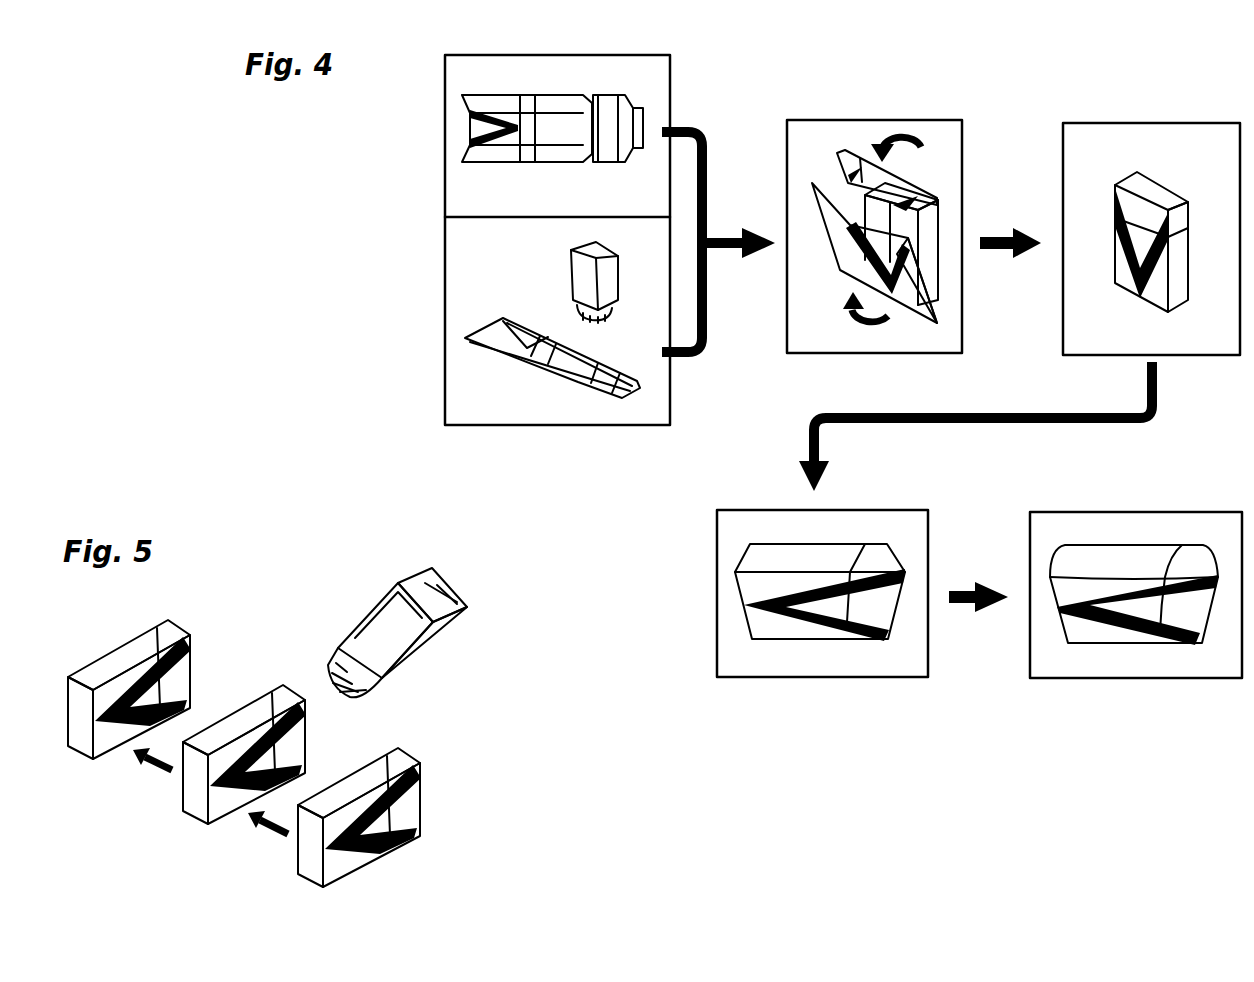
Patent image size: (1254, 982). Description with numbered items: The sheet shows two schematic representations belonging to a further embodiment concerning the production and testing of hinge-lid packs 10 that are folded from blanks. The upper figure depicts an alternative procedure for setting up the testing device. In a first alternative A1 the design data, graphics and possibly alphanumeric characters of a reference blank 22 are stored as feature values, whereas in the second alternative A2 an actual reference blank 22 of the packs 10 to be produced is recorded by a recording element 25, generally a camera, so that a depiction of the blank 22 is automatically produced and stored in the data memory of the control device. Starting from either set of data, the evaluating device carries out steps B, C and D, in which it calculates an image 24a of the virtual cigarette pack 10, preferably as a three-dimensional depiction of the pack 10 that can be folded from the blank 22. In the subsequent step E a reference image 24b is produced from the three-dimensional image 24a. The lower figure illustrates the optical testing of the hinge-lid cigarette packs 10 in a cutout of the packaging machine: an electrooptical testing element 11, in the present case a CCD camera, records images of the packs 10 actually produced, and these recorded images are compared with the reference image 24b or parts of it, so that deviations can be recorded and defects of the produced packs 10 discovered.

In FIG. 5, the pack 10 is at (233, 723).
In FIG. 5, the electrooptical testing element 11 is at (427, 585).
In FIG. 4, the reference blank 22 is at (607, 117).
In FIG. 4, the image of the virtual cigarette pack 24a is at (782, 622).
In FIG. 4, the reference image 24b is at (1112, 633).
In FIG. 4, the recording element 25 is at (583, 287).
In FIG. 4, the step A1 is at (482, 192).
In FIG. 4, the step A2 is at (482, 388).
In FIG. 4, the step B is at (820, 137).
In FIG. 4, the step C is at (1158, 138).
In FIG. 4, the step D is at (850, 522).
In FIG. 4, the step E is at (1147, 525).